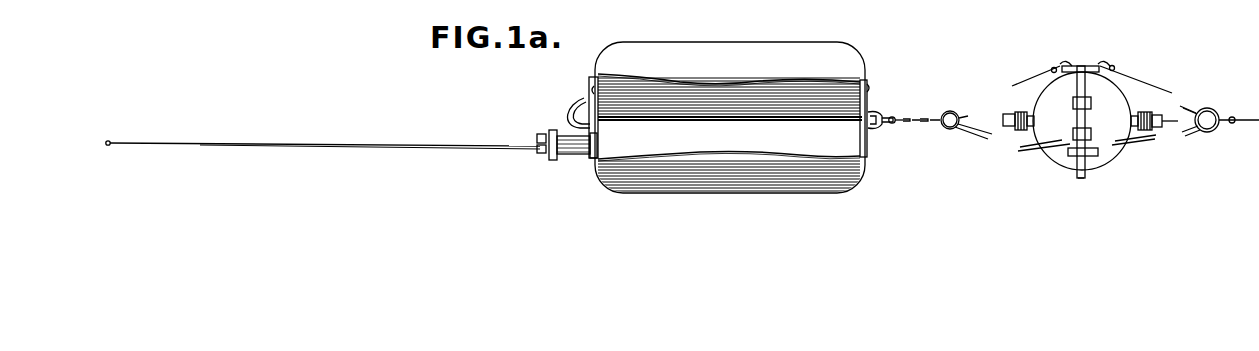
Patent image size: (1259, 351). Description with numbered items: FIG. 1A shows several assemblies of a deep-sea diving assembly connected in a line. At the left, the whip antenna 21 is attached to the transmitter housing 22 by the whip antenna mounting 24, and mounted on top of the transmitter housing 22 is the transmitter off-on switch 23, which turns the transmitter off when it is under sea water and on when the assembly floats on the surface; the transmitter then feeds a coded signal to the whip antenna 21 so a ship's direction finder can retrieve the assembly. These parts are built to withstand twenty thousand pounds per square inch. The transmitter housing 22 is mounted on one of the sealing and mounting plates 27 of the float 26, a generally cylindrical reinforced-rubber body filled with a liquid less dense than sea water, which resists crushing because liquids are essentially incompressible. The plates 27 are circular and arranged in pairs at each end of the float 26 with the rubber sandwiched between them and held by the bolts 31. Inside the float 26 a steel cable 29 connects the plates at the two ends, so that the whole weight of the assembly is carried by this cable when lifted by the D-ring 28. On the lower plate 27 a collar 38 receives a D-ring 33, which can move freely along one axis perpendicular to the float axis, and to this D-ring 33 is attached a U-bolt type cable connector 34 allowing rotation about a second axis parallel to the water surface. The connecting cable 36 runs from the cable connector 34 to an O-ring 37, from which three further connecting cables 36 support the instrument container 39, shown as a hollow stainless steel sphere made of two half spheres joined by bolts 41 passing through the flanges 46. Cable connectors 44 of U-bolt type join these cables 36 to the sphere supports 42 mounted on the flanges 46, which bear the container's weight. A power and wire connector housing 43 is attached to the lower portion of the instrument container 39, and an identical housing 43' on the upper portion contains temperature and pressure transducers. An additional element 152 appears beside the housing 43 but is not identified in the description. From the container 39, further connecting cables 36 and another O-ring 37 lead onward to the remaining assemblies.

The whip antenna 21 is at (420, 148).
The transmitter housing 22 is at (578, 156).
The transmitter off-on switch 23 is at (543, 133).
The whip antenna mounting 24 is at (543, 153).
The float 26 is at (776, 46).
The sealing and mounting plates 27 is at (594, 86).
The D-ring 28 is at (580, 102).
The steel cable 29 is at (746, 121).
The bolts 31 is at (590, 92).
The D-ring 33 is at (875, 128).
The cable connector 34 is at (896, 122).
The connecting cable 36 is at (962, 114).
The O-ring 37 is at (954, 129).
The collar 38 is at (886, 112).
The instrument container 39 is at (1068, 162).
The bolts 41 is at (1098, 110).
The sphere supports 42 is at (1080, 66).
The power and wire connector housing 43 is at (1146, 107).
The housing 43' is at (1017, 105).
The cable connectors 44 is at (1064, 64).
The flanges 46 is at (1080, 178).
The connector 152 is at (1164, 124).